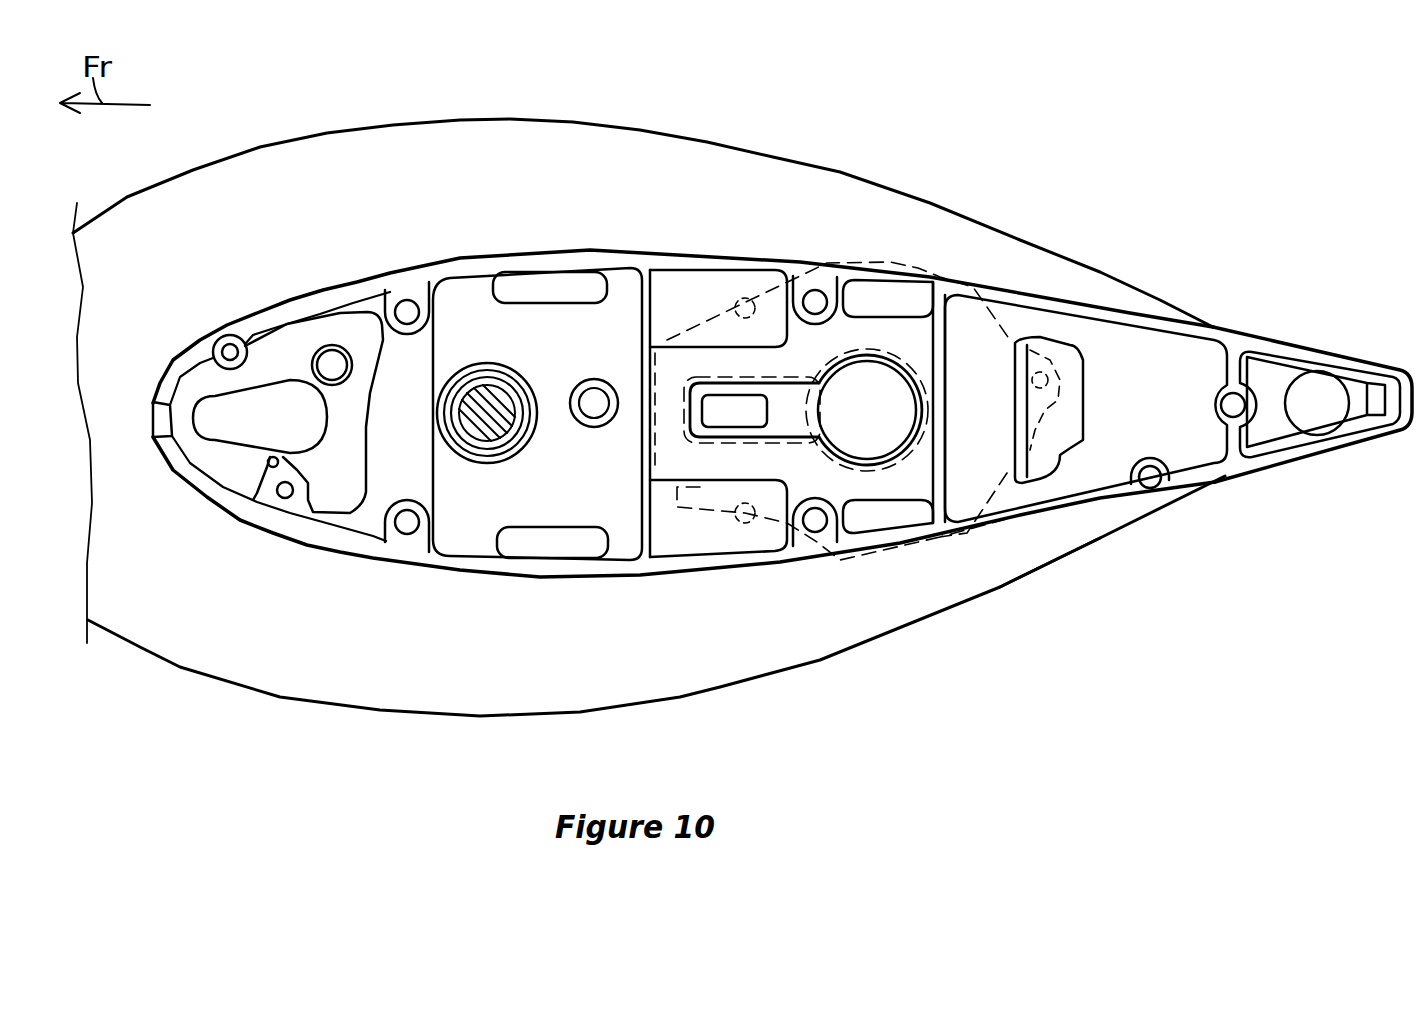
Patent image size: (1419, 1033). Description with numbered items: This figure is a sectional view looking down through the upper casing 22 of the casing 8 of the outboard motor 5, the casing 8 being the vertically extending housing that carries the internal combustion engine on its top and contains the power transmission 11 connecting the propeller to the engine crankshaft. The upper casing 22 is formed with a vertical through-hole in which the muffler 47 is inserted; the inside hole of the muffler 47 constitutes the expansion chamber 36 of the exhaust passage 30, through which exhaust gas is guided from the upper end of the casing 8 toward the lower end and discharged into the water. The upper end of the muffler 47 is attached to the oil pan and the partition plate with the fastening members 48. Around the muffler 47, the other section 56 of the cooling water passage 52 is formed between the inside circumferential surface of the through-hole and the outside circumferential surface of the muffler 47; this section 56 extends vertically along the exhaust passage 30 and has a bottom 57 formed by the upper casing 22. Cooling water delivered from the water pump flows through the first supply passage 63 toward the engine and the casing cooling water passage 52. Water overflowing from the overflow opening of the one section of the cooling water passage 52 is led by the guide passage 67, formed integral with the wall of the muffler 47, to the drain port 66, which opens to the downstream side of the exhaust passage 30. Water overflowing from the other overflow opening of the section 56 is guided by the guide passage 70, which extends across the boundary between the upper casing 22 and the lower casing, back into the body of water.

The outboard motor 5 is at (1196, 157).
The casing 8 is at (1198, 235).
The power transmission 11 is at (487, 442).
The upper casing 22 is at (1150, 541).
The exhaust passage 30 is at (861, 444).
The expansion chamber 36 is at (892, 427).
The muffler 47 is at (868, 262).
The fastening members 48 is at (750, 525).
The cooling water passage 52 is at (573, 455).
The other section of the cooling water passage 56 is at (610, 458).
The bottom 57 is at (725, 362).
The first supply passage 63 is at (593, 397).
The drain port 66 is at (718, 430).
The guide passage 67 is at (735, 460).
The guide passage 70 is at (1083, 477).